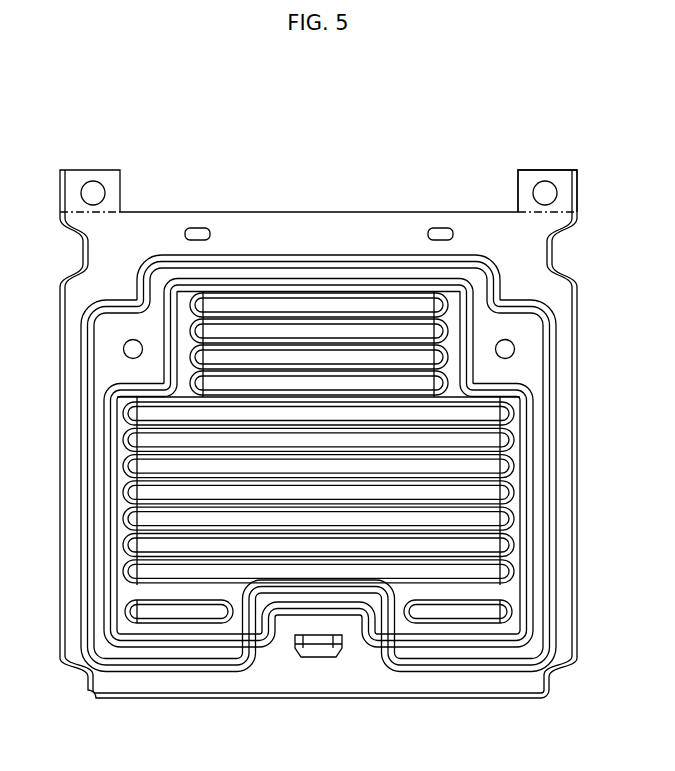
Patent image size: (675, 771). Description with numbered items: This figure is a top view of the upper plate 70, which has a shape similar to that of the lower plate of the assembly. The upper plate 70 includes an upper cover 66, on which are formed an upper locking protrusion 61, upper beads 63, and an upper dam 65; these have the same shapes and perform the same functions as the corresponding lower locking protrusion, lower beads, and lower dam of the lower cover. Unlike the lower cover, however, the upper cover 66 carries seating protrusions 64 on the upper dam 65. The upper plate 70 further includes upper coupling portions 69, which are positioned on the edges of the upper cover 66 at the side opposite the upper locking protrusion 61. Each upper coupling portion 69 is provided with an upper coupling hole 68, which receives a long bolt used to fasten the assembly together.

The upper plate 70 is at (177, 101).
The upper cover 66 is at (565, 297).
The seating protrusions 64 is at (122, 350).
The upper dam 65 is at (517, 349).
The upper coupling hole 68 is at (533, 189).
The upper coupling portions 69 is at (558, 170).
The upper locking protrusion 61 is at (316, 658).
The upper beads 63 is at (458, 613).